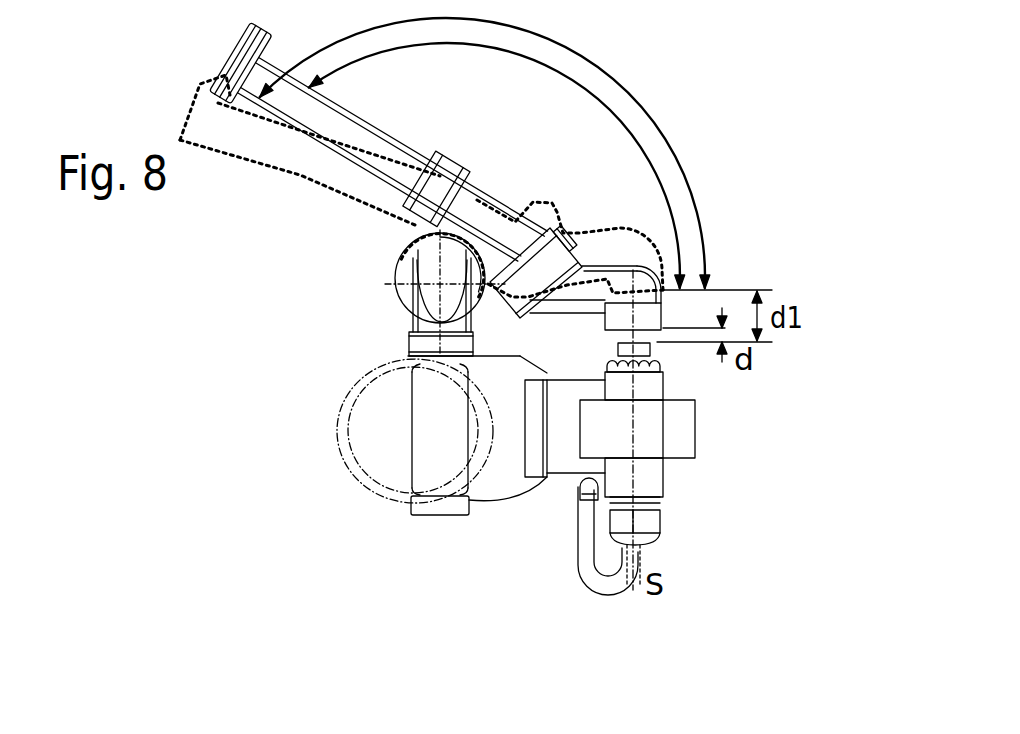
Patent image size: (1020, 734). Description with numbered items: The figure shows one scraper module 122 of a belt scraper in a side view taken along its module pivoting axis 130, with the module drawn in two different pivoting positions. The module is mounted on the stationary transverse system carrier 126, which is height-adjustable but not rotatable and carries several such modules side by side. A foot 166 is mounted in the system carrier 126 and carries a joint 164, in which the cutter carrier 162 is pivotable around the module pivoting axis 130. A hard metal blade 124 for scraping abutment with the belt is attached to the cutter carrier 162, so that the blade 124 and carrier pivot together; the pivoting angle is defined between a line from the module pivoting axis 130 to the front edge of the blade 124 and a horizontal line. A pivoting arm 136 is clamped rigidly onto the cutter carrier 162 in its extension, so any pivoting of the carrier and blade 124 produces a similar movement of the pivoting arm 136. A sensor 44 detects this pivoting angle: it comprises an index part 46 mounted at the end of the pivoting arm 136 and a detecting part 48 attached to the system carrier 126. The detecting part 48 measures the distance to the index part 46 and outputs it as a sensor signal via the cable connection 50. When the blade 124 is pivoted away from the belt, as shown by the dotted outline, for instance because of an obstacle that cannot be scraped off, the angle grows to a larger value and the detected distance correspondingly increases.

The scraper module 122 is at (708, 168).
The hard metal blade 124 is at (270, 34).
The cutter carrier 162 is at (350, 118).
The pivoting arm 136 is at (598, 278).
The index part 46 is at (650, 308).
The detecting part 48 is at (643, 387).
The sensor 44 is at (677, 464).
The cable connection 50 is at (587, 545).
The module pivoting axis 130 is at (438, 282).
The joint 164 is at (412, 308).
The foot 166 is at (412, 340).
The system carrier 126 is at (352, 402).